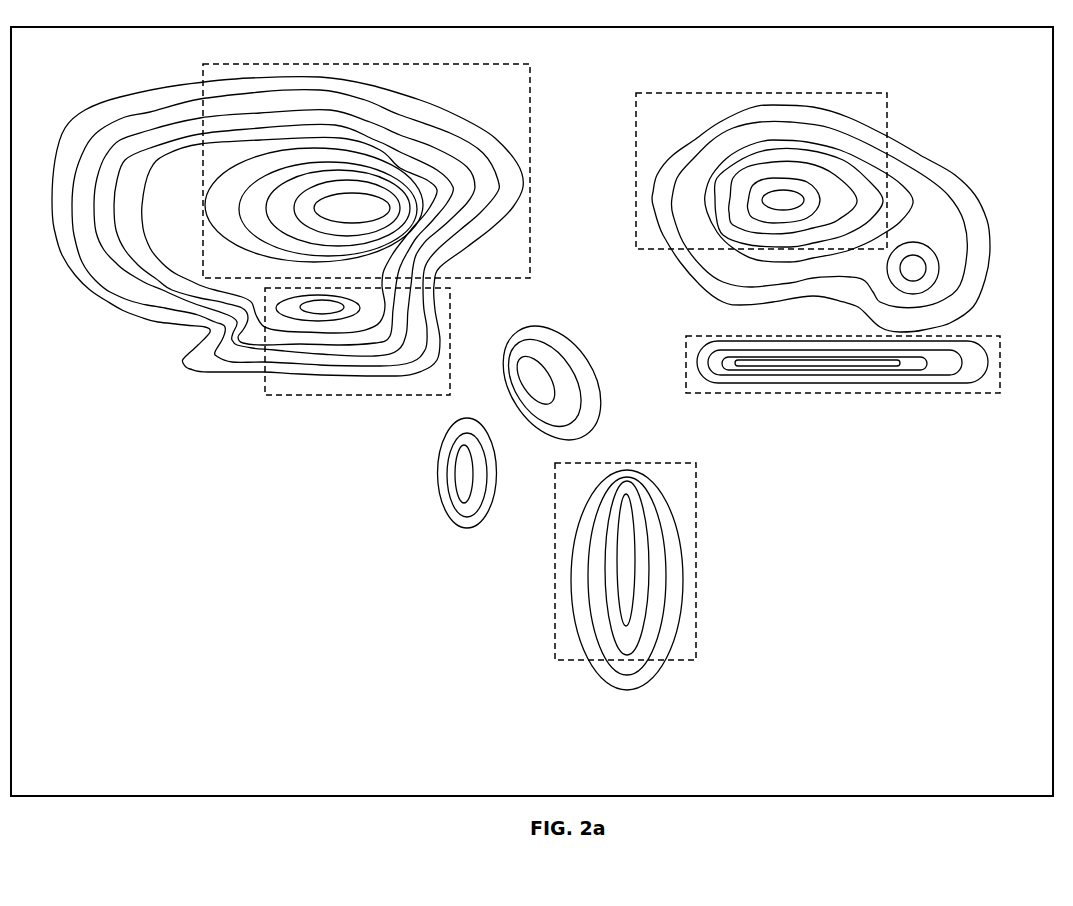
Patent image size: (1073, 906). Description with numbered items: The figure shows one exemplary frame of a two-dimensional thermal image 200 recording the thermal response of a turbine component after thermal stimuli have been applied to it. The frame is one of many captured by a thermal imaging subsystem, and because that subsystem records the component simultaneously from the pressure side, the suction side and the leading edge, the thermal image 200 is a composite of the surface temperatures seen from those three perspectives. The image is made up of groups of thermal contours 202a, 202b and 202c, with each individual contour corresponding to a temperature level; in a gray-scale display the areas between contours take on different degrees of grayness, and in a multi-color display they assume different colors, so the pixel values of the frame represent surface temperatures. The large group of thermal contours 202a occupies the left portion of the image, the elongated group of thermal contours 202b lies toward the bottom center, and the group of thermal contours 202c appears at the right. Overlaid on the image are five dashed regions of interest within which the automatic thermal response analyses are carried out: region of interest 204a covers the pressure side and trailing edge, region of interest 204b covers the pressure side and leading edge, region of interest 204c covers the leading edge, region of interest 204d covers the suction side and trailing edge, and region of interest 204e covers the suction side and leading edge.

The 2-D thermal image 200 is at (92, 782).
The group of thermal contours 202a is at (100, 108).
The group of thermal contours 202b is at (627, 692).
The group of thermal contours 202c is at (974, 200).
The region of interest 204a is at (523, 103).
The region of interest 204b is at (338, 396).
The region of interest 204c is at (690, 508).
The region of interest 204d is at (886, 116).
The region of interest 204e is at (978, 393).